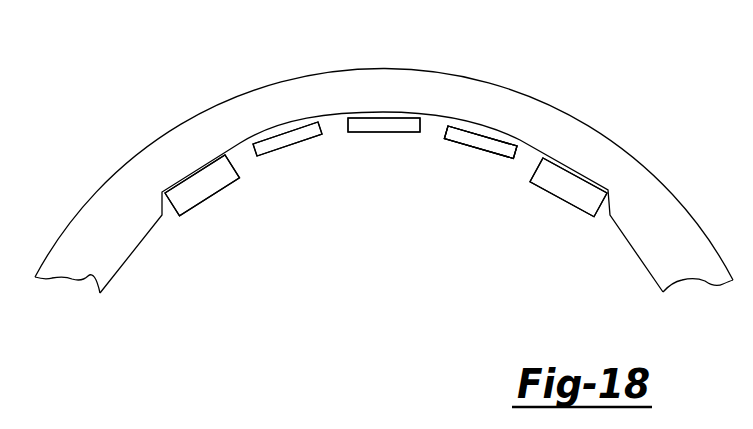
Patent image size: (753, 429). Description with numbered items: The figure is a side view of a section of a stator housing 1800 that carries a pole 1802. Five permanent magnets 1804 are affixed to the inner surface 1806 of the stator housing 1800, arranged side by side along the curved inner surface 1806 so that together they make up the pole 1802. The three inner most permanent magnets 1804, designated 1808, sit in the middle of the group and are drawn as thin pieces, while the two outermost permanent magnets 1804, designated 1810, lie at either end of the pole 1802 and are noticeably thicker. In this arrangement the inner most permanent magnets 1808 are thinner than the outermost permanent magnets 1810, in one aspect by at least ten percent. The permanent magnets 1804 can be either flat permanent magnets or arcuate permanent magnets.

The stator housing 1800 is at (107, 181).
The pole 1802 is at (388, 294).
The permanent magnets 1804 is at (357, 122).
The inner surface 1806 is at (528, 144).
The inner most permanent magnets 1808 is at (462, 140).
The outermost permanent magnets 1810 is at (190, 208).